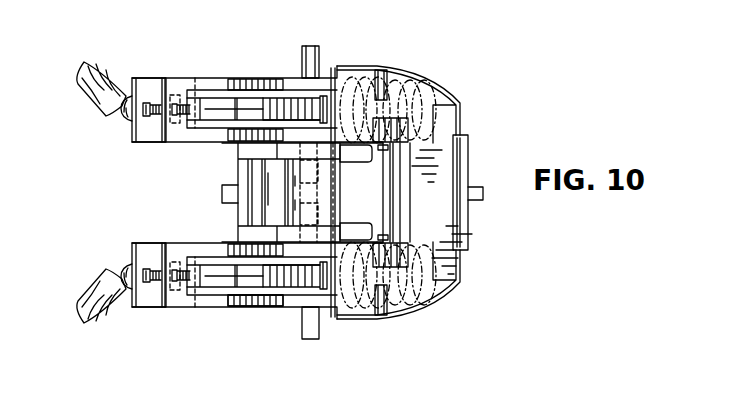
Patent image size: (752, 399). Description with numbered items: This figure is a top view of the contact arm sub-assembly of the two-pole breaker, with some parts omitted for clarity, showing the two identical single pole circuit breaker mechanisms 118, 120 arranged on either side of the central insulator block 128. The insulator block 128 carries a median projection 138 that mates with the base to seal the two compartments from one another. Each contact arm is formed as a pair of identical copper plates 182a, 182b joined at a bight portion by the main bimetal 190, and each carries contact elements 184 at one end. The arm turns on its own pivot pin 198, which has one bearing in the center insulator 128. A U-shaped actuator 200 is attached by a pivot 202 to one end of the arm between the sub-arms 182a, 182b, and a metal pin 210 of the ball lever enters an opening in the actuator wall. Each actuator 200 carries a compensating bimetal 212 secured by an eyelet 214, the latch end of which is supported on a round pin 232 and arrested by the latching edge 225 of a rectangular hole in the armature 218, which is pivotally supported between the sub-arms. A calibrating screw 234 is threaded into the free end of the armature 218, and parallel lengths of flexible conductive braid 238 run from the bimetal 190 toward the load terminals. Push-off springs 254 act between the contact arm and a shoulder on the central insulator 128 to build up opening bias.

The circuit breaker mechanism 118 is at (204, 317).
The circuit breaker mechanism 120 is at (208, 70).
The central insulator block 128 is at (477, 144).
The median projection 138 is at (224, 196).
The plate 182a is at (301, 62).
The plate 182b is at (255, 152).
The contact element 184 is at (381, 72).
The main bimetal 190 is at (134, 140).
The pivot pin 198 is at (319, 54).
The actuator 200 is at (227, 81).
The pivot 202 is at (234, 122).
The metal pin 210 is at (288, 302).
The compensating bimetal 212 is at (236, 108).
The eyelet 214 is at (309, 105).
The armature 218 is at (163, 90).
The latching edge 225 is at (207, 93).
The round pin 232 is at (173, 128).
The calibrating screw 234 is at (121, 108).
The flexible conductive braid 238 is at (100, 66).
The push-off spring 254 is at (397, 77).